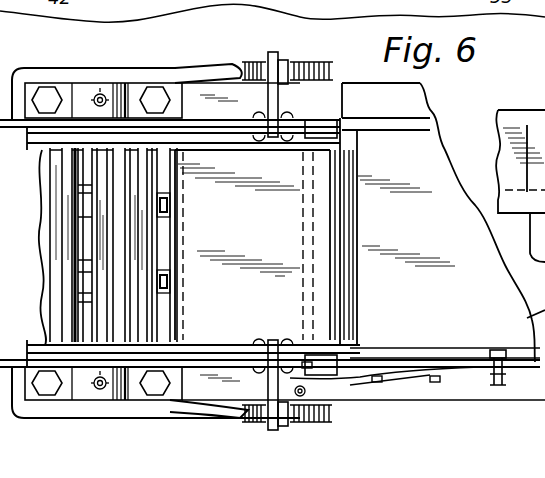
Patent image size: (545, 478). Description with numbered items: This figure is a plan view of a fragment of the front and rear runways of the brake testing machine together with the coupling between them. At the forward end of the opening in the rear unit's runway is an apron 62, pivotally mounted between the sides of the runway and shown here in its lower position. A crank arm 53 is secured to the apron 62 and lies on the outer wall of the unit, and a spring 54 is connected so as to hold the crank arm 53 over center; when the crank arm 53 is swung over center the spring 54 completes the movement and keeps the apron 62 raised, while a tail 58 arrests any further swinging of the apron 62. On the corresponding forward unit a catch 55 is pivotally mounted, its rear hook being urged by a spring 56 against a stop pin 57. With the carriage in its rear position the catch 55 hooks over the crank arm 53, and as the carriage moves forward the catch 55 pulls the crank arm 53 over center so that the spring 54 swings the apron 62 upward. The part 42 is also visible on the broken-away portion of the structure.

The slat assembly 42 is at (45, 222).
The apron 62 is at (252, 245).
The tail 58 is at (357, 290).
The spring 54 is at (268, 397).
The crank arm 53 is at (302, 396).
The catch 55 is at (370, 378).
The stop pin 57 is at (398, 382).
The spring 56 is at (442, 384).